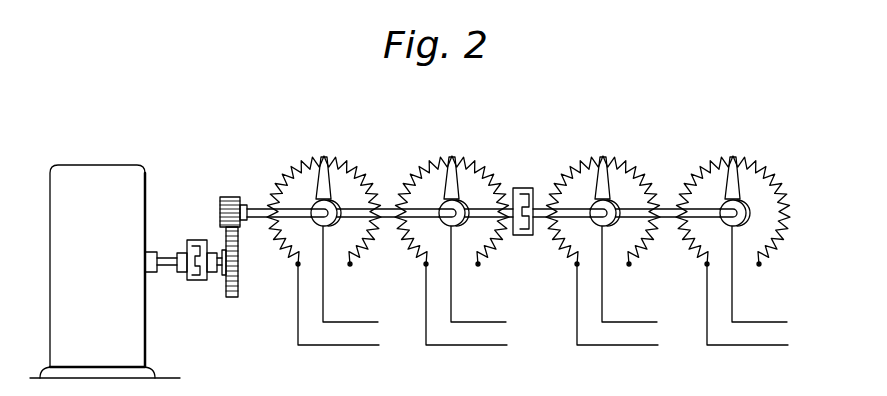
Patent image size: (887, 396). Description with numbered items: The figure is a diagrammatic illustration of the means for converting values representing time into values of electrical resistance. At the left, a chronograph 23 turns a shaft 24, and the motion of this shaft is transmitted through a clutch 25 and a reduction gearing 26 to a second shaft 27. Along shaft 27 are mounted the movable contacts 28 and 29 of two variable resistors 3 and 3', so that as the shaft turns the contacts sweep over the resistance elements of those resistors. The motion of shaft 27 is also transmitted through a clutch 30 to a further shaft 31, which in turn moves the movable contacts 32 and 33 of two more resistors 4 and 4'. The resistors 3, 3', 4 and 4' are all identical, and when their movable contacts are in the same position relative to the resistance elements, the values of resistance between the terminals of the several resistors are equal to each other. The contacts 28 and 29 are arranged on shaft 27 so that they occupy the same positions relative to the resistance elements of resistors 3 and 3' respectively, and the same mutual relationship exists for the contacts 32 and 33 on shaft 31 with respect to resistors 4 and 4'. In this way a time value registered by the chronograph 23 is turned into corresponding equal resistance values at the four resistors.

The chronograph 23 is at (100, 161).
The shaft 24 is at (167, 253).
The clutch 25 is at (196, 240).
The reduction gearing 26 is at (223, 287).
The second shaft 27 is at (253, 210).
The movable contact 28 is at (325, 156).
The variable resistor 3 is at (324, 237).
The movable contact 29 is at (452, 157).
The variable resistor 3' is at (452, 237).
The clutch 30 is at (515, 188).
The second shaft 31 is at (540, 210).
The movable contact 32 is at (605, 157).
The resistor 4 is at (603, 238).
The movable contact 33 is at (733, 157).
The resistor 4' is at (733, 237).